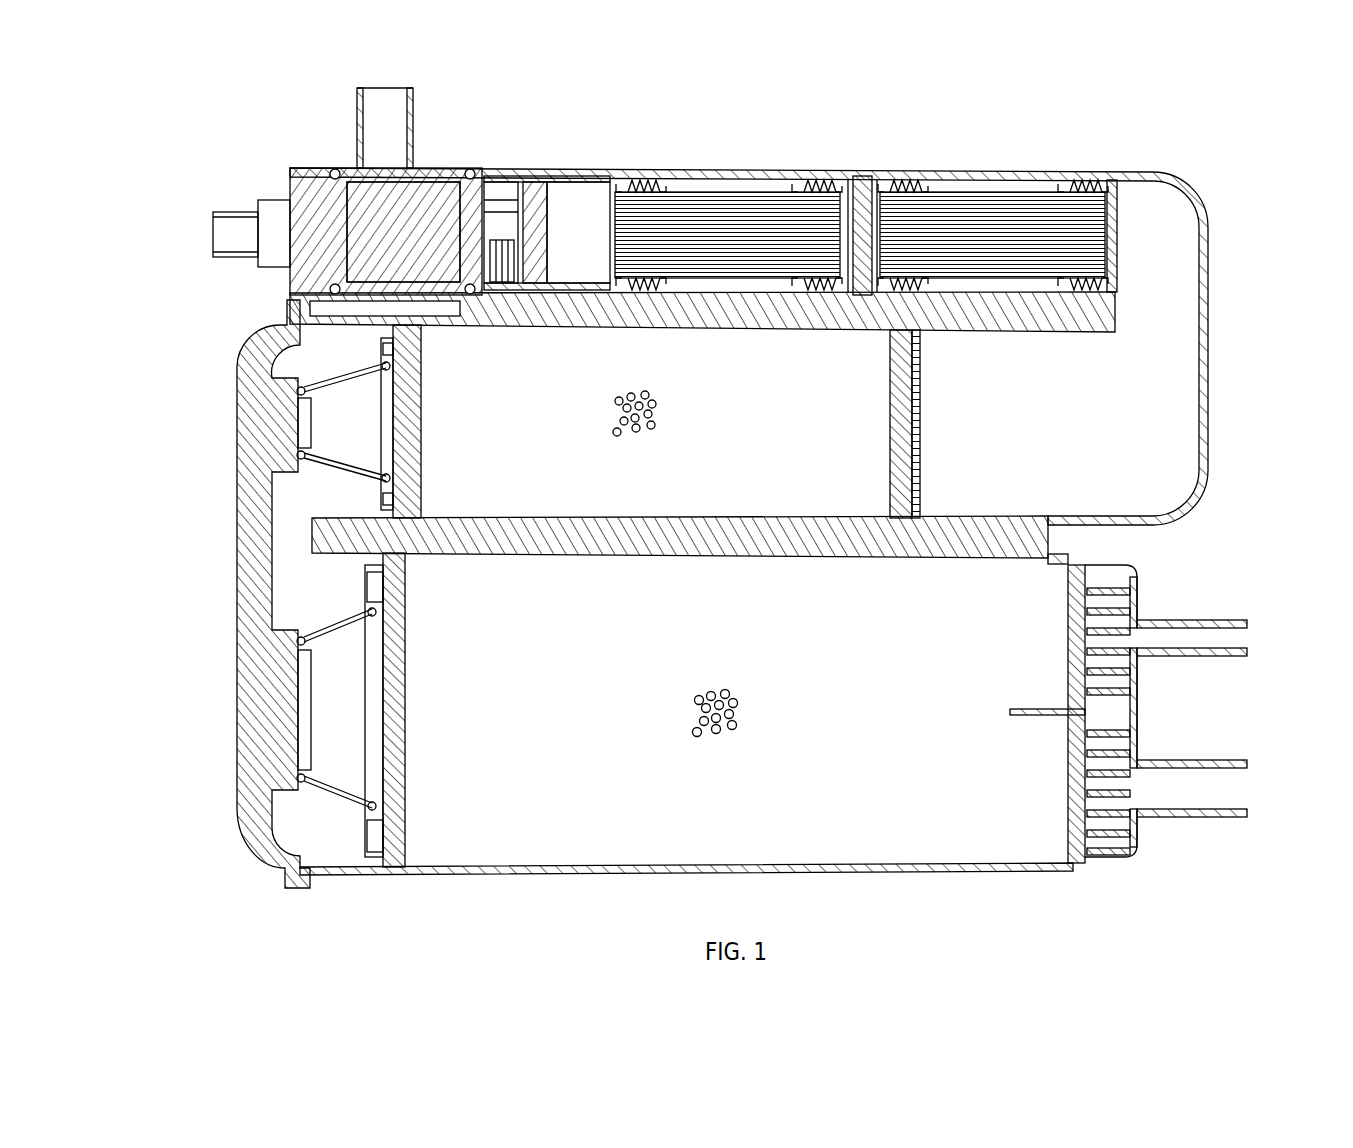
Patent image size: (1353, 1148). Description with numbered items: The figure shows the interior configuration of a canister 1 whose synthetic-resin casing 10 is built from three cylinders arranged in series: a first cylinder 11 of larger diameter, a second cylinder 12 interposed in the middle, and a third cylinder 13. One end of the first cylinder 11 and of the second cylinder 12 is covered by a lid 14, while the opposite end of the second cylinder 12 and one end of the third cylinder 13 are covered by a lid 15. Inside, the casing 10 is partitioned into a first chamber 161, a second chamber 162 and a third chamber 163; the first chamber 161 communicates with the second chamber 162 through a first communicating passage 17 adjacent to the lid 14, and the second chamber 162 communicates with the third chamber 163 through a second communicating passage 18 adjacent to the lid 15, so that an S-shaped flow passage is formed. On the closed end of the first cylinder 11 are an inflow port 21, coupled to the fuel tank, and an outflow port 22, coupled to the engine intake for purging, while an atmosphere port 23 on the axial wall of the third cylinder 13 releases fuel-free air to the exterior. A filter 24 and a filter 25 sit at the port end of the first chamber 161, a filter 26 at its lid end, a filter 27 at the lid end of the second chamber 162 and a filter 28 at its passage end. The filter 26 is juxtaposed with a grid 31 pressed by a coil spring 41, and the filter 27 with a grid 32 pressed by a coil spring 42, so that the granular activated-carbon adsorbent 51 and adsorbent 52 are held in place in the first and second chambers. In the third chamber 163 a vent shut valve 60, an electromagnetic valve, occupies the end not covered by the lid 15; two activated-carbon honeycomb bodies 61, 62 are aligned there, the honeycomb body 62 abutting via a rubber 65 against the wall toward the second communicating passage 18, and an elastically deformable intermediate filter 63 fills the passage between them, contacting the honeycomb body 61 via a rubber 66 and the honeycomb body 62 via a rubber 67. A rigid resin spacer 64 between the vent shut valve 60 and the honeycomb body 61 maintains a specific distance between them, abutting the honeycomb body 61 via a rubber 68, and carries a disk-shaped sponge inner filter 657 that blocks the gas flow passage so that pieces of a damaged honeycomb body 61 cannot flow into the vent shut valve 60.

The canister 1 is at (155, 140).
The casing 10 is at (500, 176).
The first cylinder 11 is at (955, 872).
The second cylinder 12 is at (1085, 525).
The third cylinder 13 is at (995, 176).
The lid 14 is at (267, 720).
The lid 15 is at (1210, 410).
The first communicating passage 17 is at (312, 585).
The second communicating passage 18 is at (1155, 370).
The inflow port 21 is at (1197, 817).
The outflow port 22 is at (1197, 657).
The atmosphere port 23 is at (357, 128).
The filter 24 is at (1078, 866).
The filter 25 is at (1085, 688).
The filter 26 is at (392, 866).
The filter 27 is at (375, 488).
The filter 28 is at (905, 485).
The grid 31 is at (374, 772).
The grid 32 is at (332, 404).
The coil spring 41 is at (322, 790).
The coil spring 42 is at (340, 478).
The adsorbent 51 is at (704, 717).
The adsorbent 52 is at (614, 403).
The vent shut valve 60 is at (332, 205).
The honeycomb body 61 is at (755, 225).
The honeycomb body 62 is at (1020, 230).
The intermediate filter 63 is at (858, 290).
The spacer 64 is at (588, 162).
The rubber 65 is at (1090, 186).
The rubber 66 is at (818, 186).
The rubber 67 is at (905, 186).
The rubber 68 is at (650, 186).
The first chamber 161 is at (851, 843).
The second chamber 162 is at (507, 500).
The third chamber 163 is at (728, 186).
The inner filter 657 is at (545, 180).